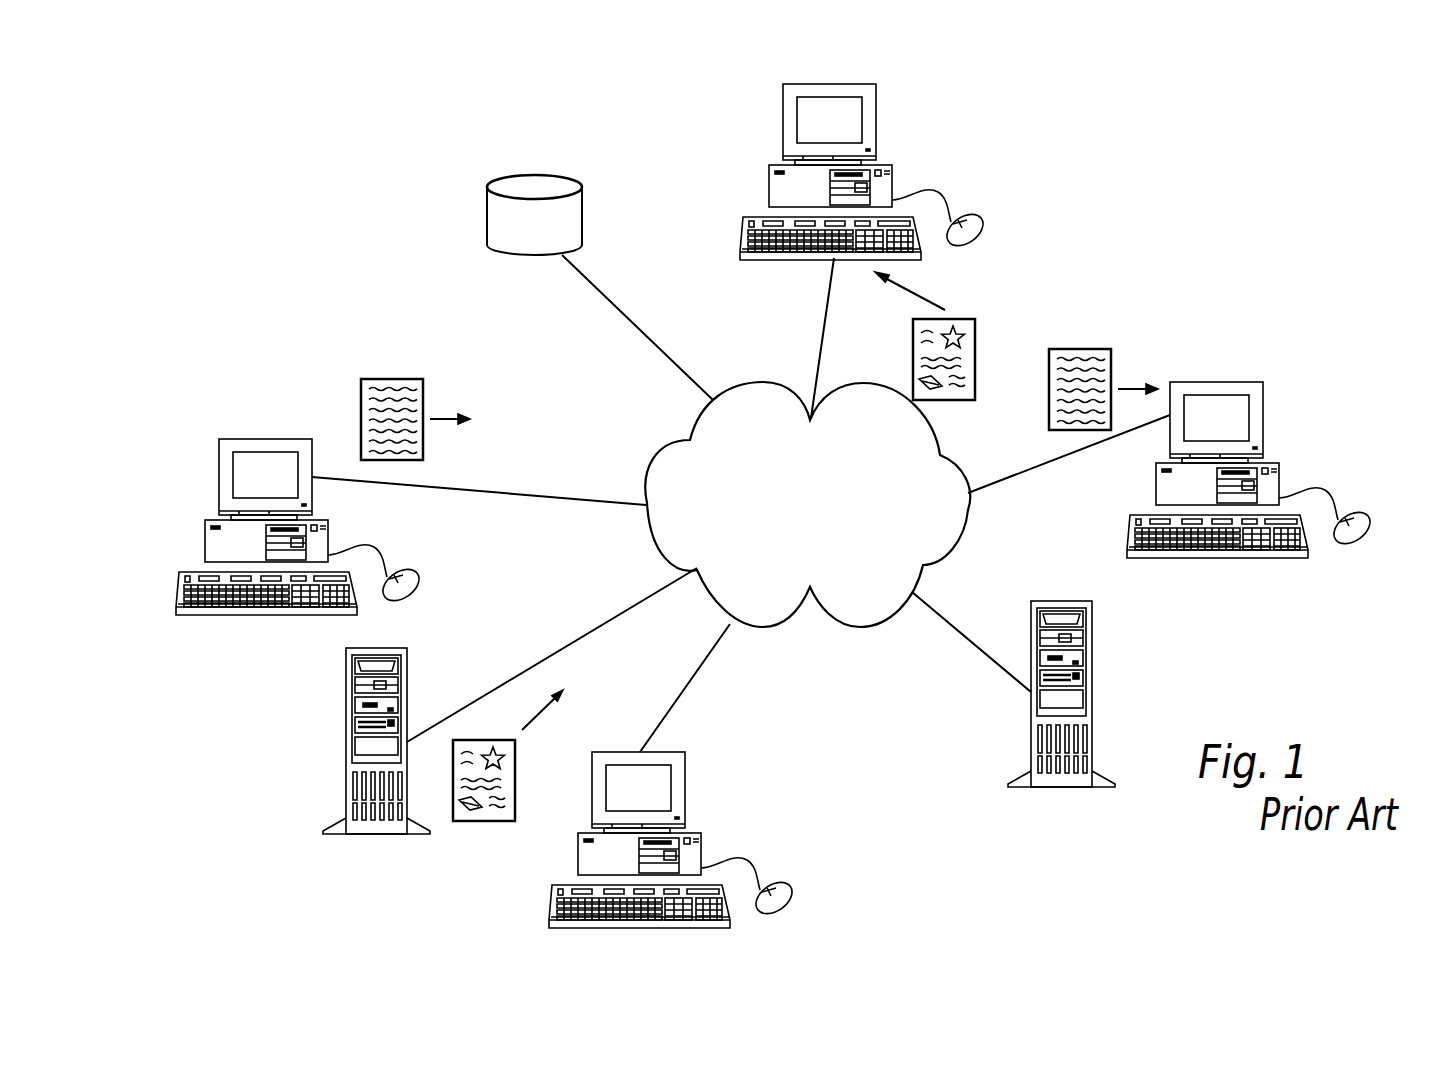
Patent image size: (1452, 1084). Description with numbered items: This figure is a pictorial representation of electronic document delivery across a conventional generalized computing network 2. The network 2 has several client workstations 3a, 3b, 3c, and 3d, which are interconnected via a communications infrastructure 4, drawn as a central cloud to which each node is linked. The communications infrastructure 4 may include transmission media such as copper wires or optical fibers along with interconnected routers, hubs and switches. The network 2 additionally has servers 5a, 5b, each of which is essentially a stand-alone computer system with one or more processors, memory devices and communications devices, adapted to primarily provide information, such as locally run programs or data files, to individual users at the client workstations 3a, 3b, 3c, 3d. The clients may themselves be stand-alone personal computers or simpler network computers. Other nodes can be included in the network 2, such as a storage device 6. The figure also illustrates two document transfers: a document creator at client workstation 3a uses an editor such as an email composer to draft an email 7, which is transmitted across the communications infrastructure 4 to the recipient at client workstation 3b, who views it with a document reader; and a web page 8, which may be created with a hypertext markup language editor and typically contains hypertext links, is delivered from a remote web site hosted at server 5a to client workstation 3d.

The computing network 2 is at (1120, 152).
The client workstation 3a is at (219, 478).
The client workstation 3b is at (1263, 423).
The client workstation 3c is at (685, 793).
The client workstation 3d is at (876, 123).
The communications infrastructure 4 is at (882, 623).
The server 5a is at (407, 684).
The server 5b is at (1092, 688).
The storage device 6 is at (582, 205).
The email 7 is at (371, 379).
The web page 8 is at (975, 338).